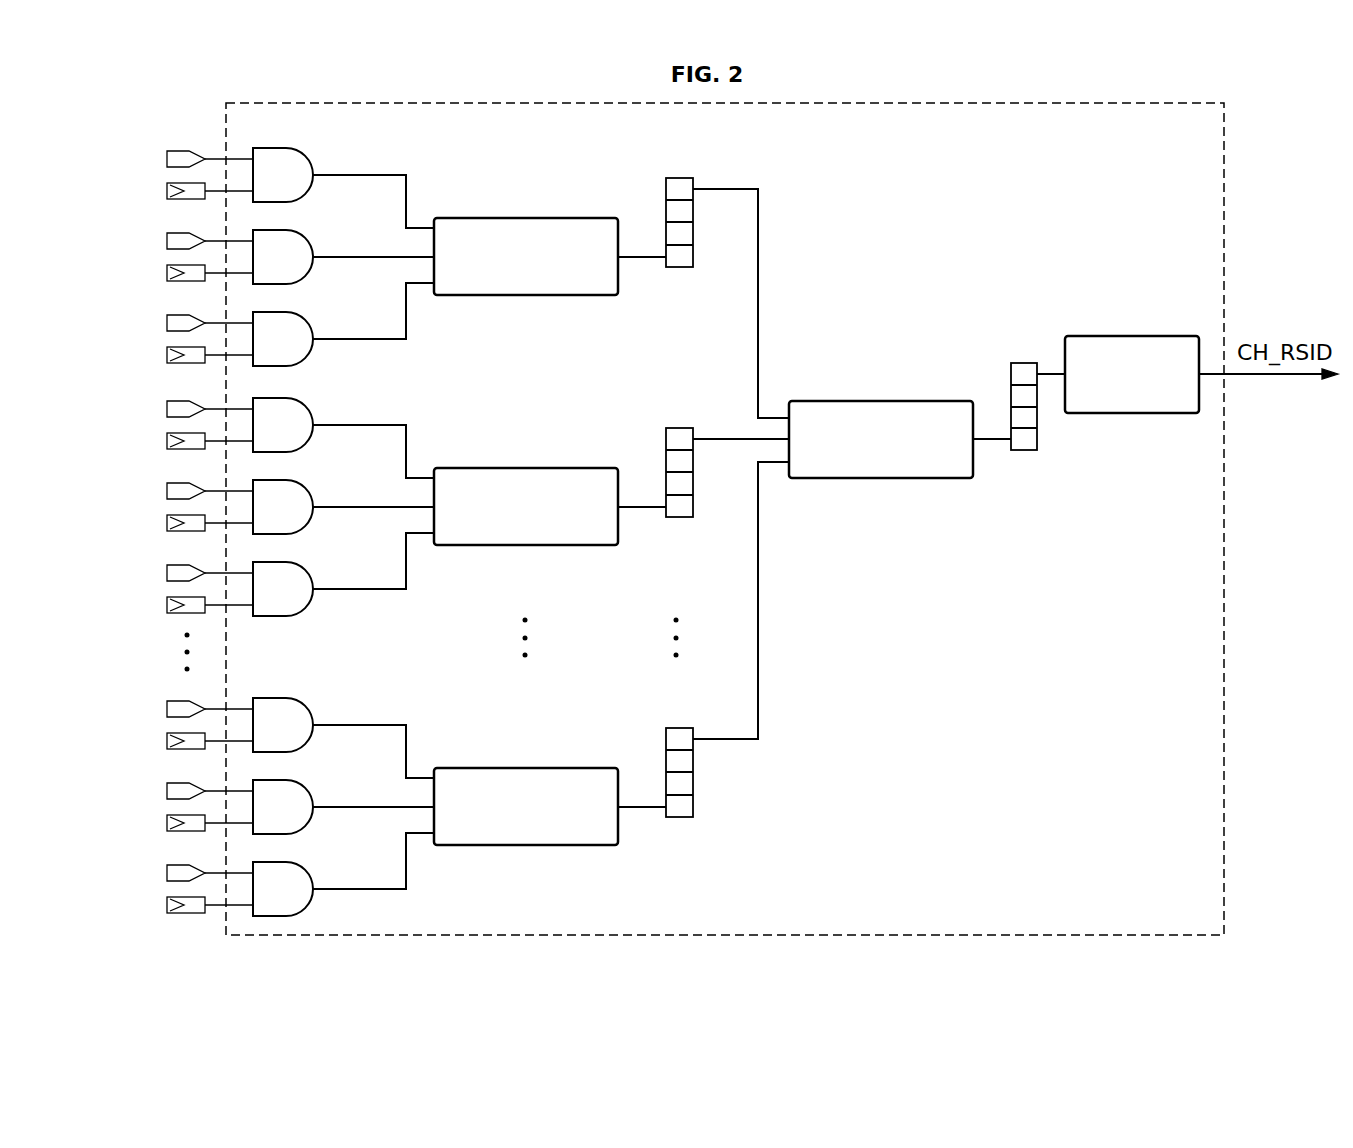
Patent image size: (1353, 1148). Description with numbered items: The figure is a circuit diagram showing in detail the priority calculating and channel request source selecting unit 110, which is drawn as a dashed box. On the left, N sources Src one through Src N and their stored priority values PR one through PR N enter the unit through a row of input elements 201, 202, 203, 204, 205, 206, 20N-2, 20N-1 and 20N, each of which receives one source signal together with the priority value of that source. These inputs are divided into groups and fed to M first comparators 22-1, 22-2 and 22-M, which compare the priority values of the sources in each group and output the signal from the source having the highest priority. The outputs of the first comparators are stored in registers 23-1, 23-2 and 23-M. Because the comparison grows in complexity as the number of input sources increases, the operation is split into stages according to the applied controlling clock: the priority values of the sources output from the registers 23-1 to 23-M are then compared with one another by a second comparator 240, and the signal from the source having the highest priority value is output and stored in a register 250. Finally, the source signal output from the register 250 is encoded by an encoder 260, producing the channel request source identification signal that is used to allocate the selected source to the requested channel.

The priority calculating and channel request source selecting unit 110 is at (1262, 158).
The AND gate 201 is at (291, 146).
The AND gate 202 is at (291, 228).
The AND gate 203 is at (291, 310).
The AND gate 204 is at (291, 396).
The AND gate 205 is at (291, 478).
The AND gate 206 is at (291, 560).
The AND gate 20N-2 is at (291, 696).
The AND gate 20N-1 is at (291, 778).
The AND gate 20N is at (291, 860).
The first comparator 22-1 is at (526, 217).
The first comparator 22-2 is at (526, 467).
The first comparator 22-M is at (526, 767).
The register 23-1 is at (679, 177).
The register 23-2 is at (679, 427).
The register 23-M is at (679, 727).
The second comparator 240 is at (881, 400).
The register 250 is at (1024, 362).
The encoder 260 is at (1131, 335).